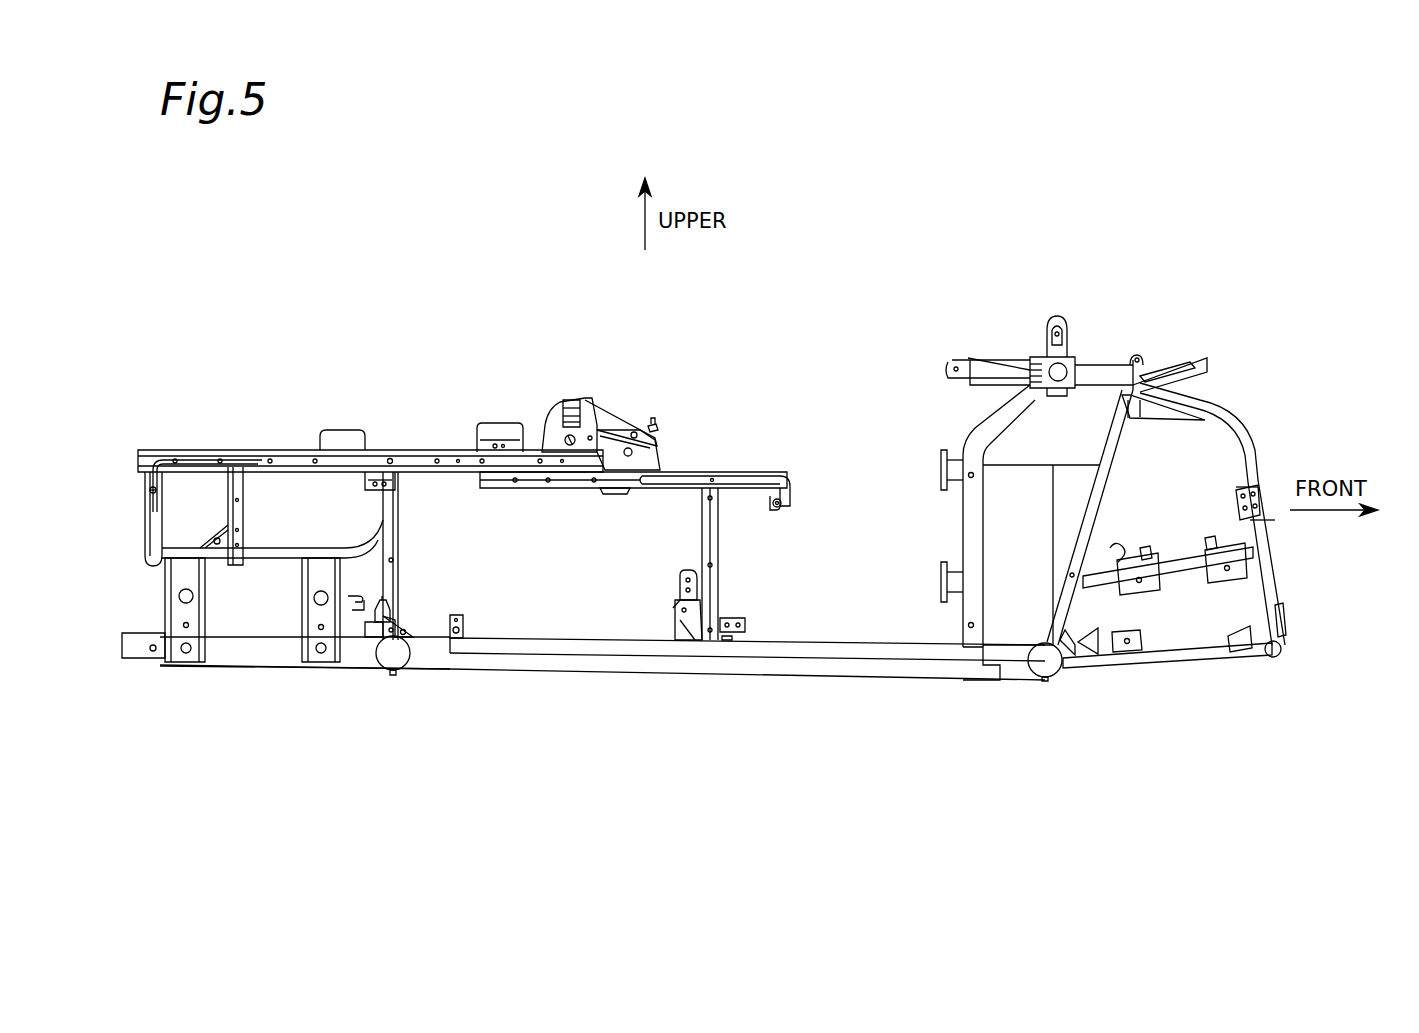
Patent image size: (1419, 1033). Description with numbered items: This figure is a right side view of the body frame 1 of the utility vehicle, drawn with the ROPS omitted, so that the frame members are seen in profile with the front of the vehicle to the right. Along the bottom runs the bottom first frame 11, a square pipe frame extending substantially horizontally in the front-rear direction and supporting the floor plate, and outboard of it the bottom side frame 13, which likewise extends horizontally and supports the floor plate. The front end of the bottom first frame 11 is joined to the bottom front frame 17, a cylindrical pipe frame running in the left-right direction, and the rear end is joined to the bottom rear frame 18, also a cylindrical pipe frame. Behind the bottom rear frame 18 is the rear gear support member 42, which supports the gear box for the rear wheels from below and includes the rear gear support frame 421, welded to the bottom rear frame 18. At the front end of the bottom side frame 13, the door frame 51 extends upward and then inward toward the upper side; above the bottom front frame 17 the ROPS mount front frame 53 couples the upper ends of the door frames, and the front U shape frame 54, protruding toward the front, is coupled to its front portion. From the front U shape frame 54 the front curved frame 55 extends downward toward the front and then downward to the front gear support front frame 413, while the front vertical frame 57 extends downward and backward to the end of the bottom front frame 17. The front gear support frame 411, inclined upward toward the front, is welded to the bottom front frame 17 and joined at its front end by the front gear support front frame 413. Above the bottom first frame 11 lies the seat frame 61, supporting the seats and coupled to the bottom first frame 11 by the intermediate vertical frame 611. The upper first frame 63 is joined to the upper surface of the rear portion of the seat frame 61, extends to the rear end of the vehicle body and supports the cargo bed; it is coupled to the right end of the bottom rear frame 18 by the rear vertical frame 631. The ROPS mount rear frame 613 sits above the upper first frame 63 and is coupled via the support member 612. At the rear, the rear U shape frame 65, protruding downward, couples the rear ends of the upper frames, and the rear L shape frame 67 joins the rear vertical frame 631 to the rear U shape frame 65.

The body frame 1 is at (1170, 306).
The bottom first frame 11 is at (446, 665).
The bottom side frame 13 is at (638, 648).
The bottom front frame 17 is at (1053, 678).
The bottom rear frame 18 is at (400, 670).
The rear gear support member 42 is at (214, 676).
The rear gear support frame 421 is at (256, 650).
The door frame 51 is at (972, 575).
The ROPS mount front frame 53 is at (1040, 356).
The front U shape frame 54 is at (1100, 360).
The front curved frame 55 is at (1245, 432).
The front vertical frame 57 is at (1095, 518).
The seat frame 61 is at (694, 476).
The intermediate vertical frame 611 is at (712, 583).
The support member 612 is at (556, 428).
The ROPS mount rear frame 613 is at (573, 400).
The upper first frame 63 is at (419, 450).
The rear vertical frame 631 is at (415, 537).
The rear U shape frame 65 is at (148, 528).
The rear L shape frame 67 is at (290, 568).
The front gear support frame 411 is at (1176, 662).
The front gear support front frame 413 is at (1278, 657).